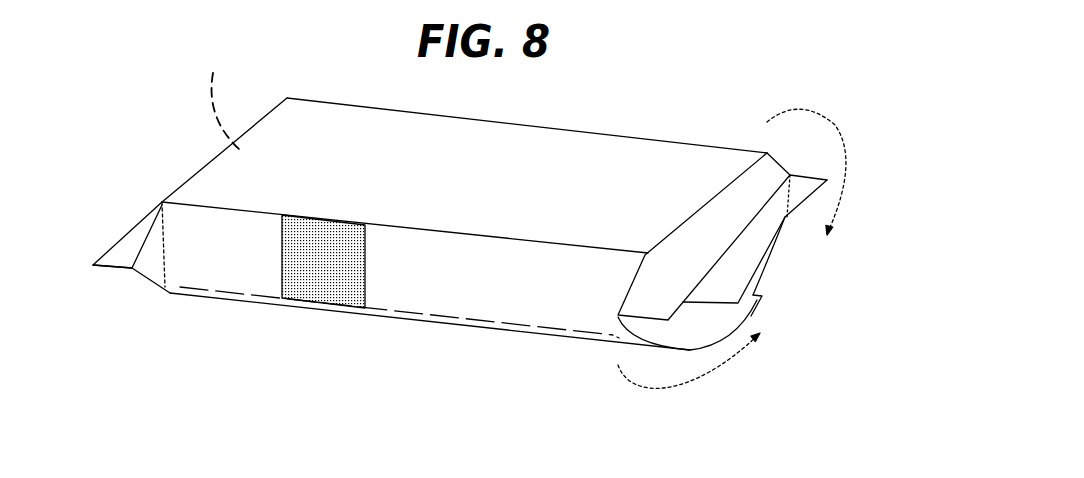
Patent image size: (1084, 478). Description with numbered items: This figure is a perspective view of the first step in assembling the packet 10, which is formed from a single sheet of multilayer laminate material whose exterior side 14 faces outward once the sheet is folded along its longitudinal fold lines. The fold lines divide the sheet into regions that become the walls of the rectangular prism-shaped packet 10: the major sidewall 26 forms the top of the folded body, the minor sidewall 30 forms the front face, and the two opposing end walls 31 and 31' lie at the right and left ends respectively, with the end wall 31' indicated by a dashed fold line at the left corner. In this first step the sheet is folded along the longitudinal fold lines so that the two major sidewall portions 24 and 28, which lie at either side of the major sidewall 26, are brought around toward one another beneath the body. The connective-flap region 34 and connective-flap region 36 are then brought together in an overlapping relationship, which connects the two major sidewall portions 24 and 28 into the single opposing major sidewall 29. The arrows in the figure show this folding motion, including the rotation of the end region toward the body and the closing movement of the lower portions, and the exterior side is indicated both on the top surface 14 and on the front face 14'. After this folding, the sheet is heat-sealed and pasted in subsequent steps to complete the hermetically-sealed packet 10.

The packet 10 is at (186, 106).
The exterior side 14 is at (688, 129).
The second end portion 14' is at (426, 301).
The major sidewall portion 24 is at (725, 320).
The major sidewall 26 is at (557, 158).
The major sidewall portion 28 is at (772, 238).
The opposing major sidewall 29 is at (753, 258).
The minor sidewall 30 is at (437, 290).
The end wall 31 is at (715, 195).
The end wall 31' is at (240, 100).
The connective-flap region 34 is at (760, 298).
The connective-flap region 36 is at (740, 281).